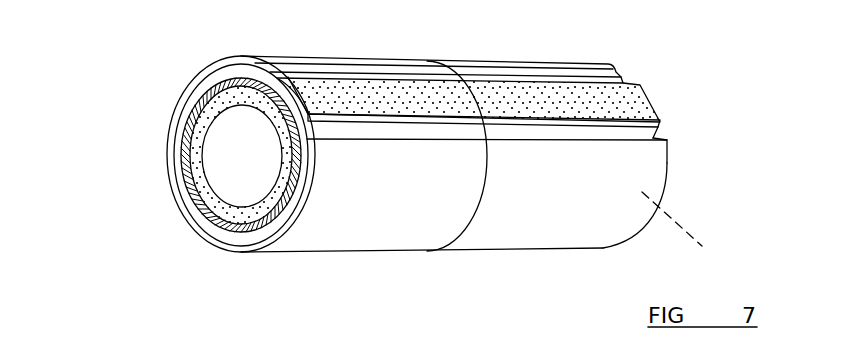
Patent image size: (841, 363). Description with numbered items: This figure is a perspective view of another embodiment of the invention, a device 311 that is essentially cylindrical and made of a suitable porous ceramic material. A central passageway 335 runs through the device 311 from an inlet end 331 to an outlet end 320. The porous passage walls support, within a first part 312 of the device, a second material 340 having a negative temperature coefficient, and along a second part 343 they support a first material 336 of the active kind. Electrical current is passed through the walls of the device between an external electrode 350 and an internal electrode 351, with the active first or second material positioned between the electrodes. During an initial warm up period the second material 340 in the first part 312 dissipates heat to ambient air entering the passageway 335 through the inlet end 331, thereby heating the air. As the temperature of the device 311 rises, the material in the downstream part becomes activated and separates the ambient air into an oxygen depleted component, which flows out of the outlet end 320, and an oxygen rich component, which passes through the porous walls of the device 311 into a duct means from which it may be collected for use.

The external electrode 350 is at (193, 87).
The inlet end 331 is at (170, 130).
The internal electrode 351 is at (210, 223).
The second material 340 is at (243, 238).
The central passageway 335 is at (243, 182).
The device 311 is at (403, 252).
The first part 312 is at (308, 255).
The outlet end 320 is at (667, 167).
The second part 343 is at (543, 250).
The first material 336 is at (702, 246).